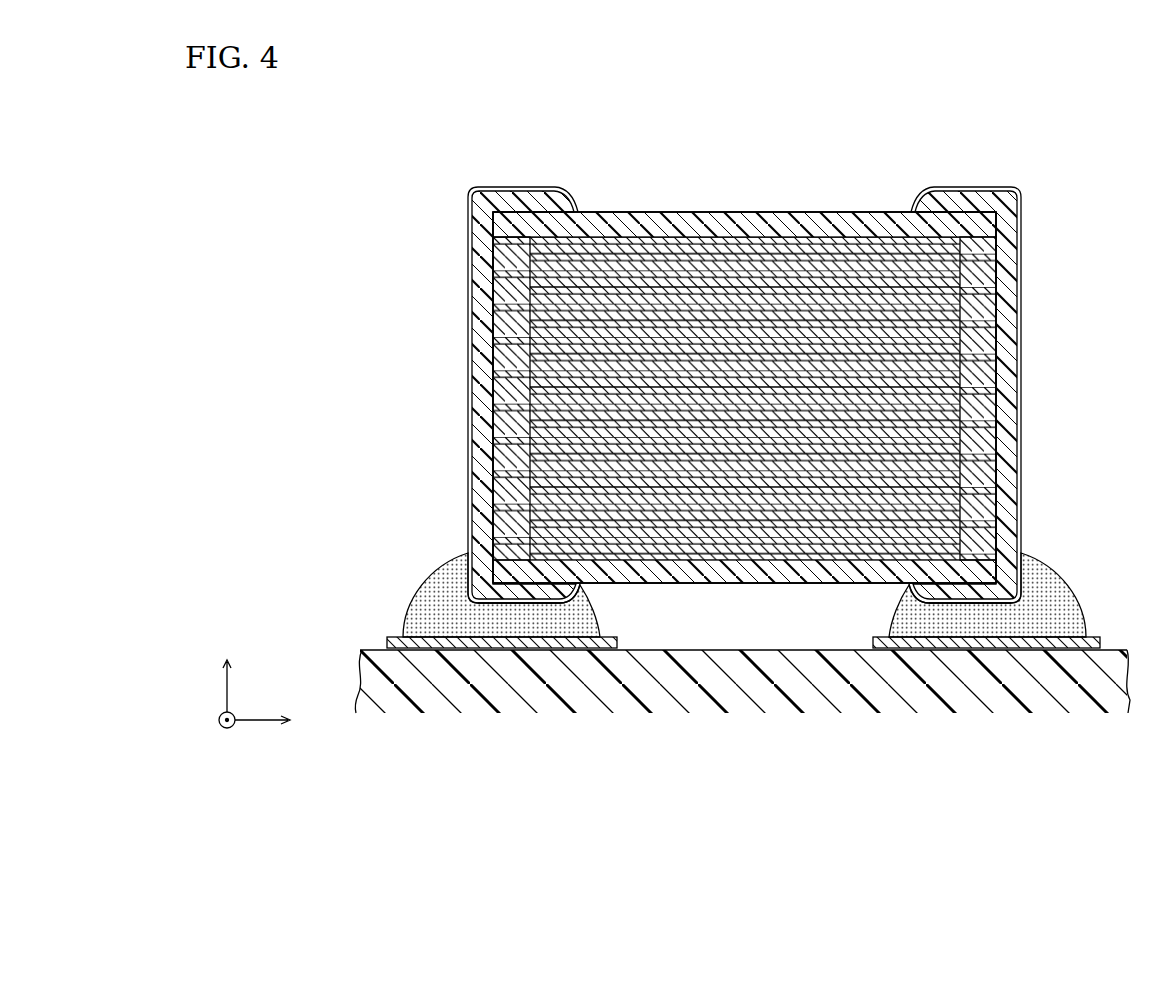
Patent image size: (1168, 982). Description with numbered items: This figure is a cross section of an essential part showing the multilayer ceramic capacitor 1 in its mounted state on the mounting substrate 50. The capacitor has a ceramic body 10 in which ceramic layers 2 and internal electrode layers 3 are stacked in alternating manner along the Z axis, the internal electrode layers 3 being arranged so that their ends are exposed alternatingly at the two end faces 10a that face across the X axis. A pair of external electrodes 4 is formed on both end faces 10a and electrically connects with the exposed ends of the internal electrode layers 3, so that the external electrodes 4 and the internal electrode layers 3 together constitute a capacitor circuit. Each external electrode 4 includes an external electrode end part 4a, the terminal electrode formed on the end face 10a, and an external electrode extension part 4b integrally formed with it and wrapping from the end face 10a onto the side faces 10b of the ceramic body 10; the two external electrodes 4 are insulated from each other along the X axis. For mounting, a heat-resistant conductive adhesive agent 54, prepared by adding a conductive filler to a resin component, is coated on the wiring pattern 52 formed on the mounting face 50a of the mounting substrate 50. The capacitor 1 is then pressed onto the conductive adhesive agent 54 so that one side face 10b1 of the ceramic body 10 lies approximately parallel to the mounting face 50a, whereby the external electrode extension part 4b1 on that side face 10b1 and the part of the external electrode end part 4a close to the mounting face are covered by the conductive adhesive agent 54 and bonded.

The multilayer ceramic capacitor 1 is at (781, 112).
The ceramic layers 2 is at (668, 216).
The internal electrode layers 3 is at (790, 232).
The external electrodes 4 is at (468, 186).
The external electrode end part 4a is at (1021, 265).
The external electrode extension part 4b is at (541, 193).
The external electrode extension part on the mounting-side face 4b1 is at (540, 600).
The ceramic body 10 is at (632, 212).
The end faces 10a is at (1021, 215).
The side faces 10b is at (870, 212).
The one side face 10b1 is at (700, 586).
The mounting substrate 50 is at (1053, 673).
The mounting face 50a is at (787, 653).
The wiring pattern 52 is at (400, 637).
The conductive adhesive agent 54 is at (443, 562).